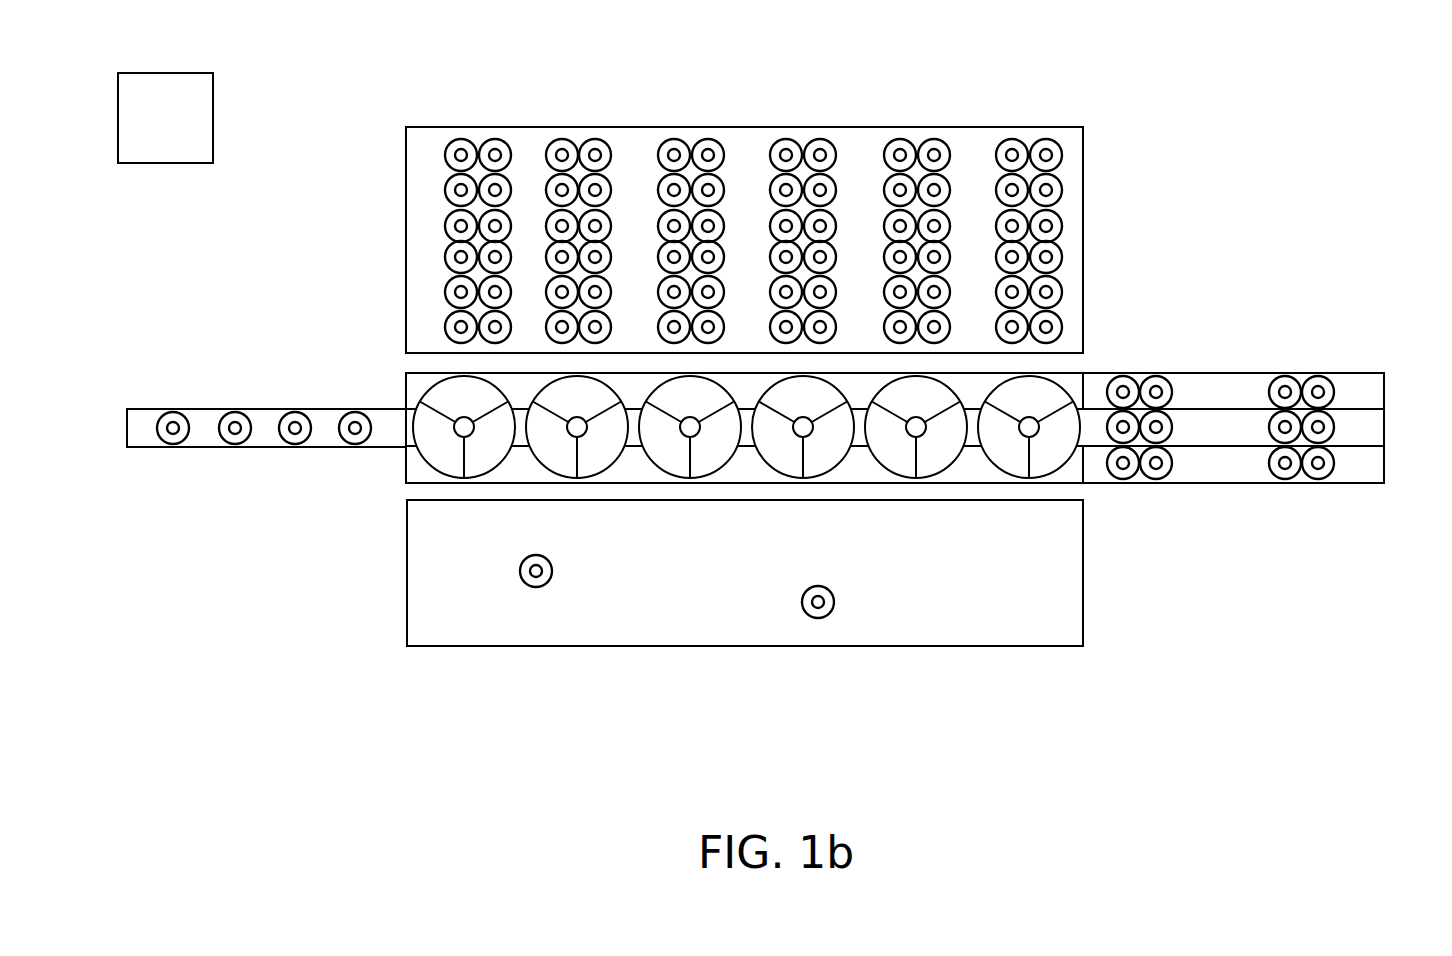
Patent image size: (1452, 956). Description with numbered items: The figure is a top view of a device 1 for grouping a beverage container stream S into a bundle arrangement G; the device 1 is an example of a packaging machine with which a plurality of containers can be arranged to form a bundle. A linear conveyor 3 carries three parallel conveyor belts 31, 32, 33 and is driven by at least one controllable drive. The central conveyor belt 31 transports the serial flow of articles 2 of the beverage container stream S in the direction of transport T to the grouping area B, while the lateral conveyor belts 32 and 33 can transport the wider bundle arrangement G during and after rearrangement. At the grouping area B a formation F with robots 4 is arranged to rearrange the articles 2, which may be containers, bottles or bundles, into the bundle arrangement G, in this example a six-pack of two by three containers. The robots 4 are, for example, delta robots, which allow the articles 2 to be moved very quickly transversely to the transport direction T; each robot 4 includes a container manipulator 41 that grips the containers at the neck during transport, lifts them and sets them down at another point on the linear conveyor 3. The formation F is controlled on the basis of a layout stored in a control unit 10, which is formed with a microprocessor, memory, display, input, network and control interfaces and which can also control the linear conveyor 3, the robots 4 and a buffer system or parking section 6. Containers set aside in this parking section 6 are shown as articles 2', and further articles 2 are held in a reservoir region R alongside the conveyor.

The device 1 is at (1250, 57).
The control unit 10 is at (150, 137).
The articles 2 is at (742, 303).
The rejected containers 2' is at (703, 587).
The linear conveyor 3 is at (225, 506).
The conveyor belt 31 is at (137, 428).
The lateral conveyor belt 32 is at (1372, 463).
The lateral conveyor belt 33 is at (1372, 390).
The robots 4 is at (713, 465).
The container manipulator 41 is at (421, 458).
The parking section 6 is at (1085, 610).
The reservoir region R is at (692, 136).
The beverage container stream S is at (194, 470).
The formation F is at (380, 474).
The direction of transport T is at (290, 378).
The bundle arrangement G is at (1292, 356).
The grouping area B is at (753, 530).